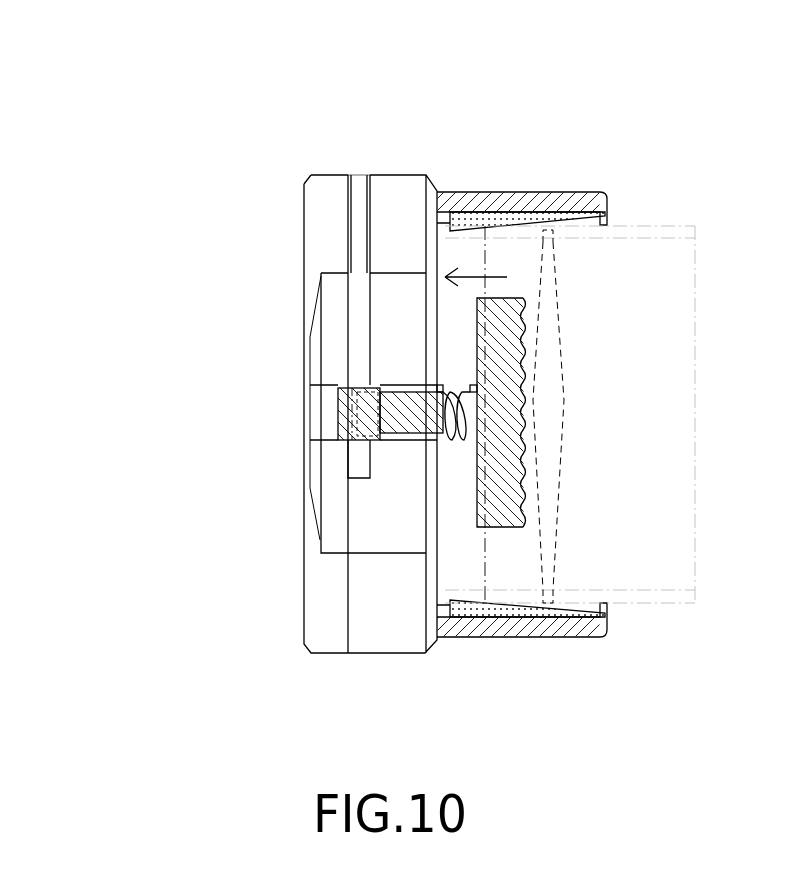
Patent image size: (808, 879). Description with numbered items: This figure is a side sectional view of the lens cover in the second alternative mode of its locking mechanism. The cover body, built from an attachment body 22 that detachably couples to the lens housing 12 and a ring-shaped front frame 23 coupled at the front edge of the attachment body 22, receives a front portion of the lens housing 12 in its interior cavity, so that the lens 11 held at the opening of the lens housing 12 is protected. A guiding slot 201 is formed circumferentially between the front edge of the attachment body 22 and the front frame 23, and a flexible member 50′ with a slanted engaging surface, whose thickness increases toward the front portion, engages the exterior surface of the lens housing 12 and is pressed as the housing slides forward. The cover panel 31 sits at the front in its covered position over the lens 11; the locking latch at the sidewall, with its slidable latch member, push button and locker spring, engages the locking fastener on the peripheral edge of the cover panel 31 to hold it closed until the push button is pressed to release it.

The guiding slot 201 is at (348, 170).
The cover panel 31 is at (358, 202).
The attachment body 22 is at (402, 200).
The front frame 23 is at (330, 208).
The flexible member 50′ is at (497, 215).
The lens 11 is at (547, 278).
The lens housing 12 is at (690, 232).